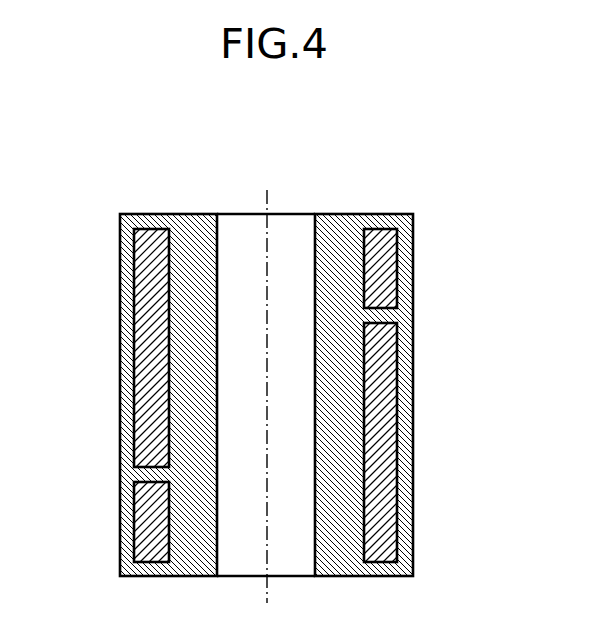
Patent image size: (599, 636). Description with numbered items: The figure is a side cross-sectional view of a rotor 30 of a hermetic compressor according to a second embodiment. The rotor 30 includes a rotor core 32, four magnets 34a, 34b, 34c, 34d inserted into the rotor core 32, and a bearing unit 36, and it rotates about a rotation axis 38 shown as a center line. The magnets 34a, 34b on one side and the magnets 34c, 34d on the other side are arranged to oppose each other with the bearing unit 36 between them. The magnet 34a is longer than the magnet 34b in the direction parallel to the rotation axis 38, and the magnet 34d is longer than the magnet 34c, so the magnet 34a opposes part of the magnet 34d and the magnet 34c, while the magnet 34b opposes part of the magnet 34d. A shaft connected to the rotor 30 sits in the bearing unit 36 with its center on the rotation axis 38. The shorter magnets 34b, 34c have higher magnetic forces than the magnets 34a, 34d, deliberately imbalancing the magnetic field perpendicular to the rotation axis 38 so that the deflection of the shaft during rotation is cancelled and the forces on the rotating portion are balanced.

The rotor 30 is at (470, 153).
The rotor core 32 is at (165, 223).
The magnet 34a is at (146, 336).
The magnet 34b is at (152, 553).
The magnet 34c is at (380, 236).
The magnet 34d is at (388, 434).
The bearing unit 36 is at (232, 226).
The rotation axis 38 is at (268, 192).